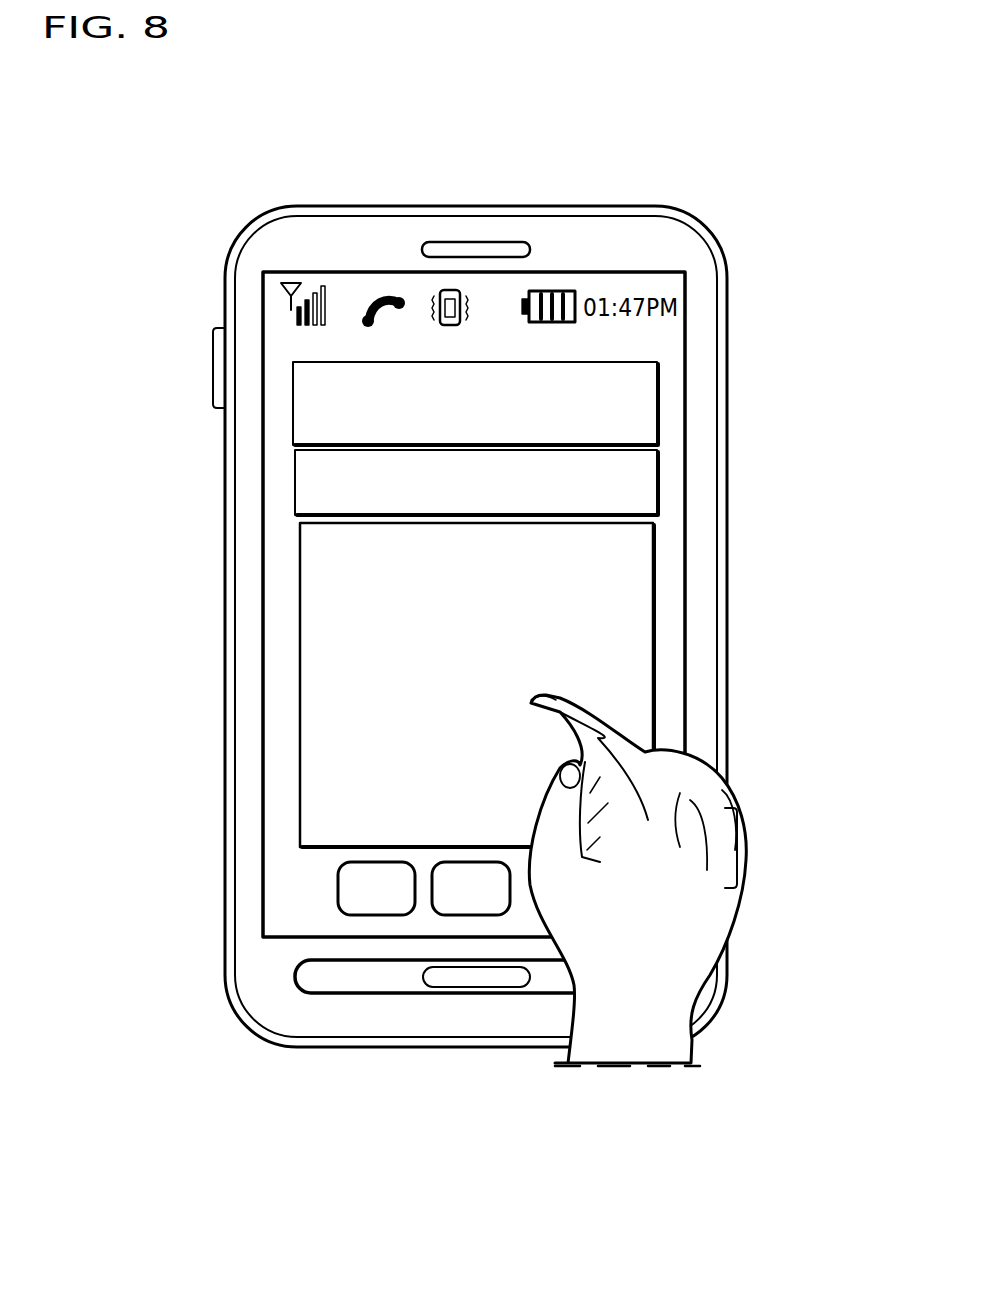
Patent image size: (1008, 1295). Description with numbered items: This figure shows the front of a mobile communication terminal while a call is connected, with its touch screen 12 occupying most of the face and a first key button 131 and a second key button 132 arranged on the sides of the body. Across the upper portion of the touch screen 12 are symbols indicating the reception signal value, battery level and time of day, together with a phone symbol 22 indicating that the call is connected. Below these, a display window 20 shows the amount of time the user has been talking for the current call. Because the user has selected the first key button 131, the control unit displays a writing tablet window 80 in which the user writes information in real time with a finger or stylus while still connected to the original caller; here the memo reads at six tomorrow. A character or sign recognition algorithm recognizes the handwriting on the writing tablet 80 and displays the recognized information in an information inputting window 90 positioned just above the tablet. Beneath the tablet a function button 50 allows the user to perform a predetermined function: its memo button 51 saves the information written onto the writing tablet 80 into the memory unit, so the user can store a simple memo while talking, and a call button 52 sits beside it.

The touch screen 12 is at (685, 343).
The display window 20 is at (657, 400).
The phone symbol 22 is at (376, 300).
The function button 50 is at (316, 1016).
The memo button 51 is at (380, 917).
The call button 52 is at (467, 917).
The writing tablet window 80 is at (655, 615).
The information inputting window 90 is at (655, 473).
The first key button 131 is at (737, 850).
The second key button 132 is at (219, 367).